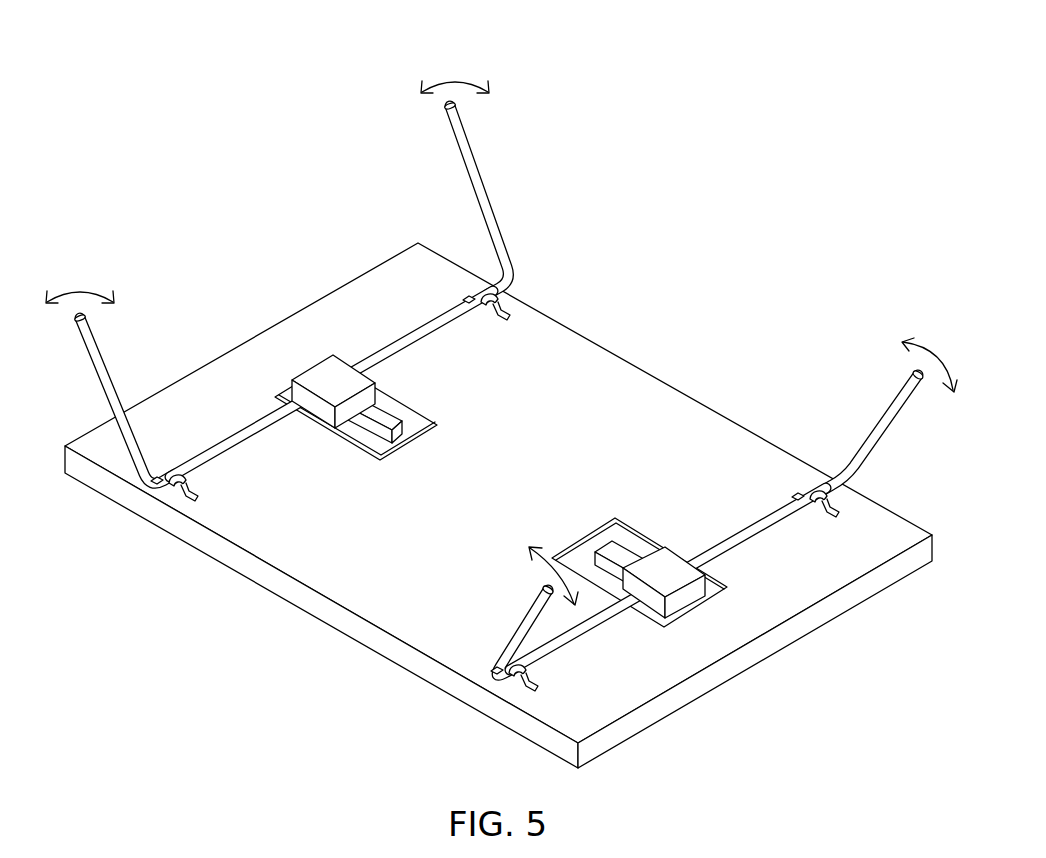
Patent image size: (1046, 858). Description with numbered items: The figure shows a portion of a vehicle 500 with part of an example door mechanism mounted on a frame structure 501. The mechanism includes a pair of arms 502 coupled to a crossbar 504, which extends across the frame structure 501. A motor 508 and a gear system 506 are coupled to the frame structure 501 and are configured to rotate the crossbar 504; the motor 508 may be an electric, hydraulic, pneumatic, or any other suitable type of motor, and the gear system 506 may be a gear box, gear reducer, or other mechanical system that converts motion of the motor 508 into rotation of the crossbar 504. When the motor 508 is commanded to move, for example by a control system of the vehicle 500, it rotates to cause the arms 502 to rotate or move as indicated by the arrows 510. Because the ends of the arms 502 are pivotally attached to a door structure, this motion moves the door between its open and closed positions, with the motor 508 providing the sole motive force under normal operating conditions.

The vehicle 500 is at (236, 98).
The frame structure 501 is at (345, 633).
The arms 502 is at (107, 360).
The crossbar 504 is at (398, 335).
The gear system 506 is at (305, 335).
The motor 508 is at (373, 440).
The arrows 510 is at (78, 290).